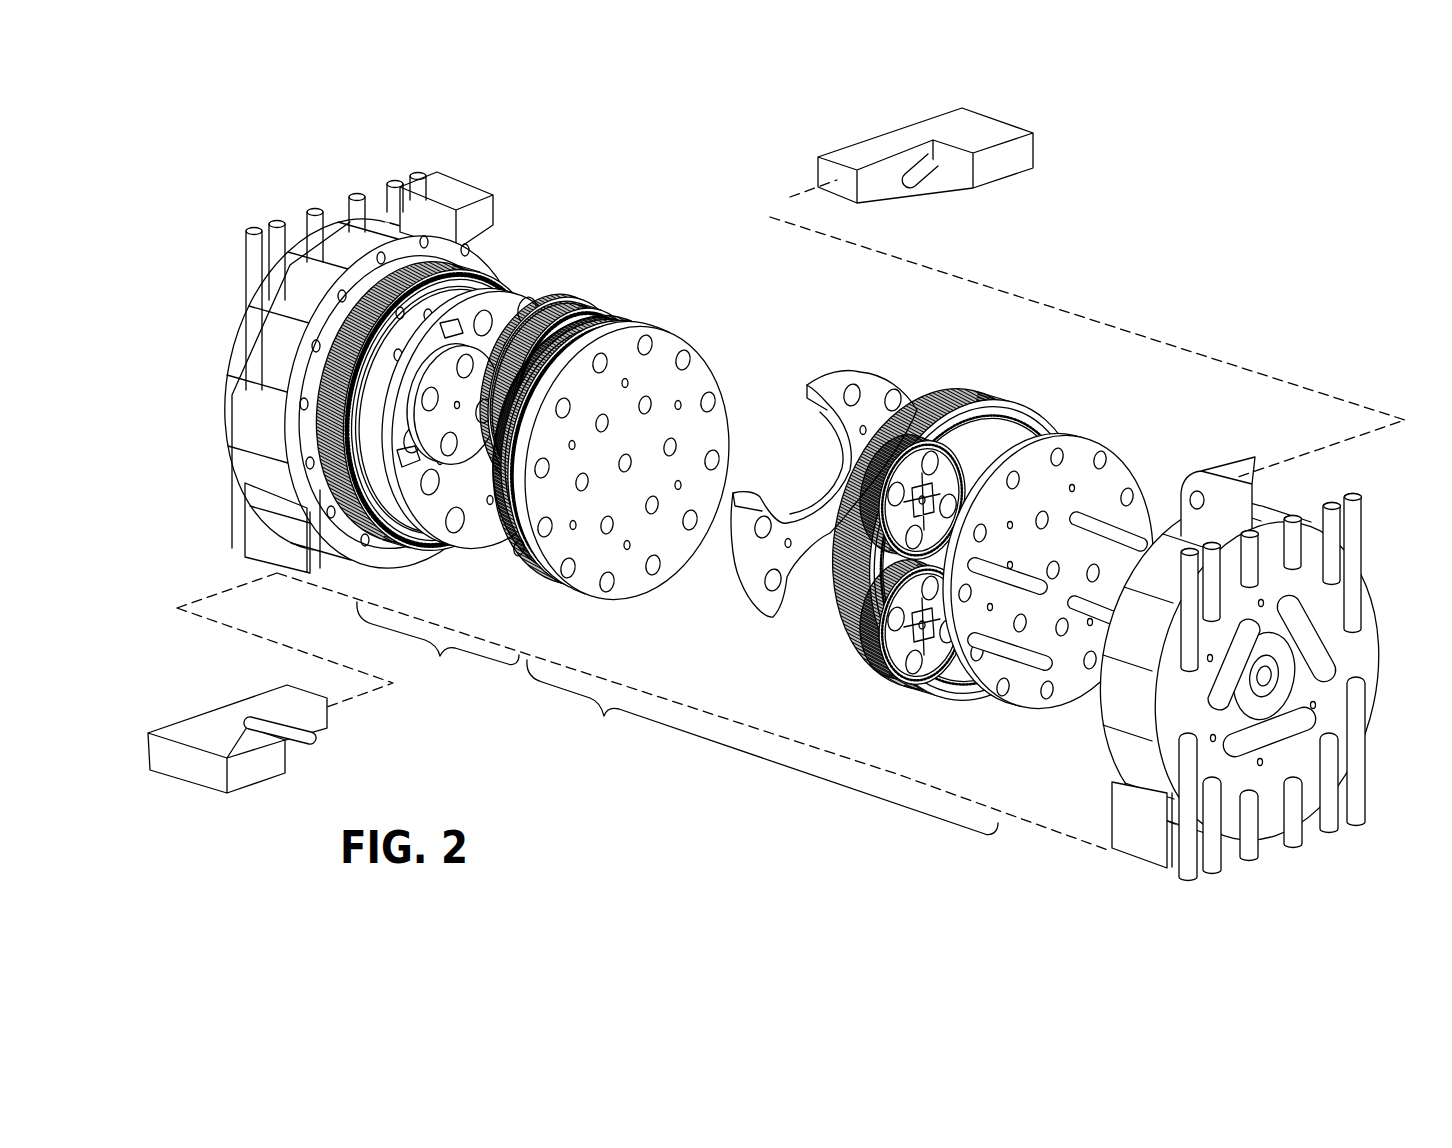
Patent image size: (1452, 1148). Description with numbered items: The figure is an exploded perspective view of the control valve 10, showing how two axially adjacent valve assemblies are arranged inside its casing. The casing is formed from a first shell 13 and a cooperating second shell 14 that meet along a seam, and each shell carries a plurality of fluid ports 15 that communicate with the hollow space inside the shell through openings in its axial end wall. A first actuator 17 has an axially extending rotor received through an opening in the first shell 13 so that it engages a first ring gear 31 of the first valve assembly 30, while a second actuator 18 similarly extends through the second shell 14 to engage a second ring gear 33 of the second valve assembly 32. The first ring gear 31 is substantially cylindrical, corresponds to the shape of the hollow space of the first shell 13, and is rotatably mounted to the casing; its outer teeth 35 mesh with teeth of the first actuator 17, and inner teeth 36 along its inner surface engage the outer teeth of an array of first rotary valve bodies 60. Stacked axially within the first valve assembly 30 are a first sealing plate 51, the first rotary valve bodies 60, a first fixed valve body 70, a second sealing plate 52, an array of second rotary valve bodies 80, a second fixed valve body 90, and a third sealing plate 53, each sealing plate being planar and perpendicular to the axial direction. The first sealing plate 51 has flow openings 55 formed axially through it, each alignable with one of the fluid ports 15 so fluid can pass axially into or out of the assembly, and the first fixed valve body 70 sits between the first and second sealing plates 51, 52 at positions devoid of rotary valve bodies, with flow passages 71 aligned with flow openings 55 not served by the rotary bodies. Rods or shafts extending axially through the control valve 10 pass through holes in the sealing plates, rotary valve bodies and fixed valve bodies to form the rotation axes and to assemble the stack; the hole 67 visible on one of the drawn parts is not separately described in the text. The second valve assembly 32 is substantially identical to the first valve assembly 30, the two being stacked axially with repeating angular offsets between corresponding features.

The control valve 10 is at (577, 130).
The first shell 13 is at (240, 351).
The second shell 14 is at (1357, 615).
The fluid ports 15 is at (275, 219).
The first actuator 17 is at (195, 725).
The second actuator 18 is at (902, 138).
The first valve assembly 30 is at (438, 644).
The first ring gear 31 is at (423, 253).
The second valve assembly 32 is at (762, 747).
The second ring gear 33 is at (1000, 415).
The outer teeth 35 is at (462, 247).
The inner teeth 36 is at (490, 277).
The first sealing plate 51 is at (546, 330).
The second sealing plate 52 is at (613, 317).
The third sealing plate 53 is at (643, 320).
The flow openings 55 is at (687, 357).
The first rotary valve bodies 60 is at (530, 360).
The hub disc 67 is at (485, 377).
The first fixed valve body 70 is at (391, 418).
The flow passages 71 is at (430, 482).
The second rotary valve bodies 80 is at (515, 553).
The second fixed valve body 90 is at (578, 327).